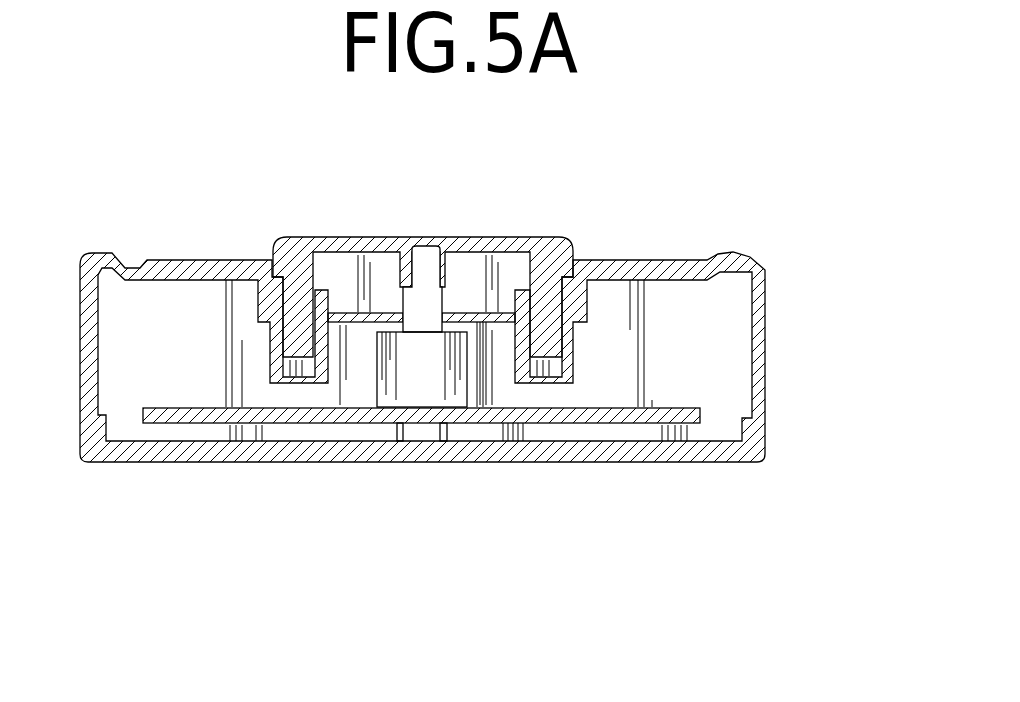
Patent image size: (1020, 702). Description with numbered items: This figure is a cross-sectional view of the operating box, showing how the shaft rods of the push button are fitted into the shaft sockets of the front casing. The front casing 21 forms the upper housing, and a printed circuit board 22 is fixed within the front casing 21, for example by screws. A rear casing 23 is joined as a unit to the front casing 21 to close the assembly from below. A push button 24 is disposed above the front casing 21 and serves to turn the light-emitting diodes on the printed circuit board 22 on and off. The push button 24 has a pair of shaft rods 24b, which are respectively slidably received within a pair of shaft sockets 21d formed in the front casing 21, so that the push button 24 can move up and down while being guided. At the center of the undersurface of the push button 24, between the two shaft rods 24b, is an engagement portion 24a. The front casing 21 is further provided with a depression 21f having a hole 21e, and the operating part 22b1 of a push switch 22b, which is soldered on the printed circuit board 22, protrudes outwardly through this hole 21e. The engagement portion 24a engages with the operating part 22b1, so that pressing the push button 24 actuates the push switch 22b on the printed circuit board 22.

The front casing 21 is at (767, 266).
The shaft socket 21d is at (277, 358).
The hole 21e is at (455, 335).
The depression 21f is at (340, 238).
The printed circuit board 22 is at (700, 415).
The push switch 22b is at (424, 388).
The operating part 22b1 is at (417, 297).
The rear casing 23 is at (762, 455).
The push button 24 is at (520, 237).
The engagement portion 24a is at (457, 262).
The shaft rod 24b is at (298, 327).